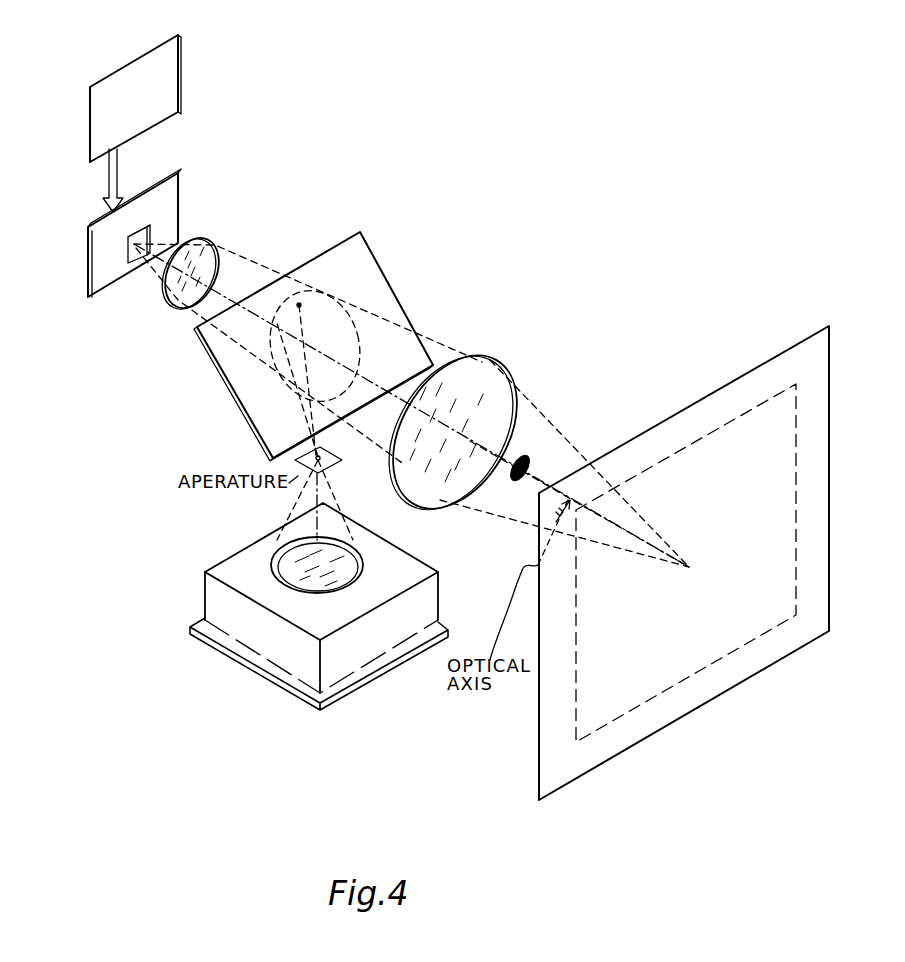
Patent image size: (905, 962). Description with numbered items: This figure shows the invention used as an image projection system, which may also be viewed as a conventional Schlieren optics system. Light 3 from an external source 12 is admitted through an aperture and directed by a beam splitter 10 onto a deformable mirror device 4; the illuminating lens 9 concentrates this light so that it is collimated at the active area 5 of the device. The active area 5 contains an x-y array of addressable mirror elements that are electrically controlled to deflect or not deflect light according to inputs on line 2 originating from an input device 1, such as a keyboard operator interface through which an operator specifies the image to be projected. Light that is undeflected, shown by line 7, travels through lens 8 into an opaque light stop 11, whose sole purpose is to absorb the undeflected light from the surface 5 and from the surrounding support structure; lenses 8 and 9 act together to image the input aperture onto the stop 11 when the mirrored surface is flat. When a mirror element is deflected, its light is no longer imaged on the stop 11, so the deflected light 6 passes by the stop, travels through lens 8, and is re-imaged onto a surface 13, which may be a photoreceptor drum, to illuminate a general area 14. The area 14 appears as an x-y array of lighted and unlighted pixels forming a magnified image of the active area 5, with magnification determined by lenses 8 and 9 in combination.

The input device 1 is at (175, 52).
The line 2 is at (118, 168).
The light 3 is at (160, 228).
The deformable mirror device 4 is at (178, 181).
The active area 5 is at (127, 258).
The deflected light 6 is at (193, 232).
The undeflected light 7 is at (220, 246).
The lens 8 is at (497, 357).
The illuminating lens 9 is at (172, 307).
The beam splitter 10 is at (362, 234).
The opaque light stop 11 is at (527, 468).
The external source 12 is at (208, 595).
The surface 13 is at (687, 403).
The general area 14 is at (576, 681).